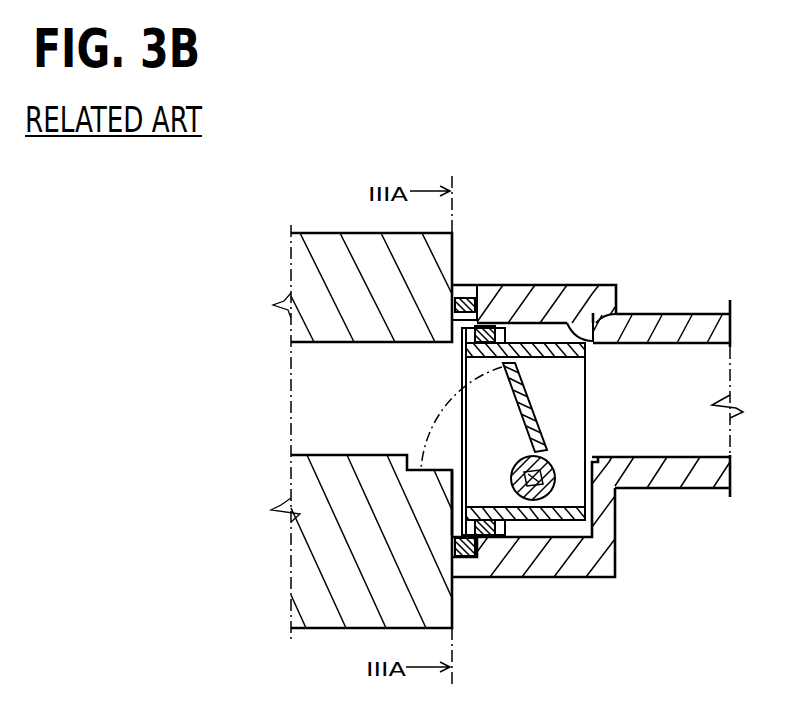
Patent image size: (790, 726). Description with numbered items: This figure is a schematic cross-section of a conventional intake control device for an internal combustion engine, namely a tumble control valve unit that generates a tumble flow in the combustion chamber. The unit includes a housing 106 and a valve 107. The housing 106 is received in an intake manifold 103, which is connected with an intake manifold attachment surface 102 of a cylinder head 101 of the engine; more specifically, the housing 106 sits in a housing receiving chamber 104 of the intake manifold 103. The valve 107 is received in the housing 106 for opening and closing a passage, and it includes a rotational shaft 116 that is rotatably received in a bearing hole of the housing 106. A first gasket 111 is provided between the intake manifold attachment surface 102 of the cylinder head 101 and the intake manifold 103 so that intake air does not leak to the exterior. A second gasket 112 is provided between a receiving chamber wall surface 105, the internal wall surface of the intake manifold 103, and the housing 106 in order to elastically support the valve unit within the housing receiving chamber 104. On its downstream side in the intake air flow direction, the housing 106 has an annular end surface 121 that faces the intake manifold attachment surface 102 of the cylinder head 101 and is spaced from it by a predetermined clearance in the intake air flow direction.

The cylinder head 101 is at (320, 242).
The intake manifold attachment surface 102 is at (475, 312).
The intake manifold 103 is at (657, 322).
The housing receiving chamber 104 is at (543, 330).
The receiving chamber wall surface 105 is at (622, 313).
The housing 106 is at (577, 522).
The valve 107 is at (543, 417).
The first gasket 111 is at (452, 295).
The second gasket 112 is at (488, 535).
The rotational shaft 116 is at (547, 515).
The annular end surface 121 is at (452, 518).